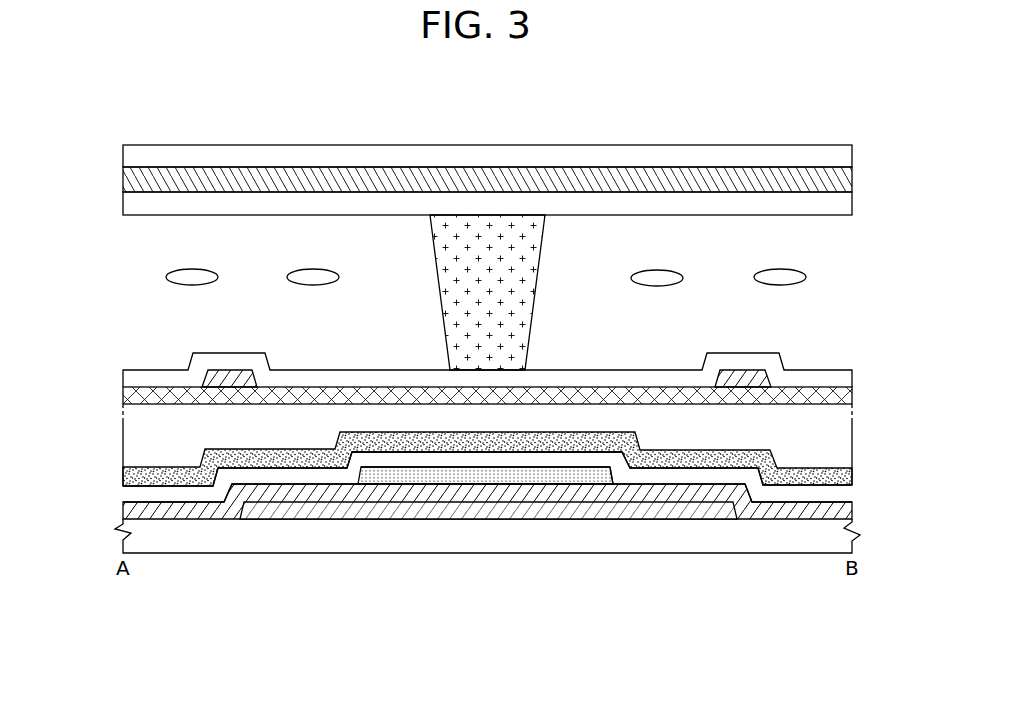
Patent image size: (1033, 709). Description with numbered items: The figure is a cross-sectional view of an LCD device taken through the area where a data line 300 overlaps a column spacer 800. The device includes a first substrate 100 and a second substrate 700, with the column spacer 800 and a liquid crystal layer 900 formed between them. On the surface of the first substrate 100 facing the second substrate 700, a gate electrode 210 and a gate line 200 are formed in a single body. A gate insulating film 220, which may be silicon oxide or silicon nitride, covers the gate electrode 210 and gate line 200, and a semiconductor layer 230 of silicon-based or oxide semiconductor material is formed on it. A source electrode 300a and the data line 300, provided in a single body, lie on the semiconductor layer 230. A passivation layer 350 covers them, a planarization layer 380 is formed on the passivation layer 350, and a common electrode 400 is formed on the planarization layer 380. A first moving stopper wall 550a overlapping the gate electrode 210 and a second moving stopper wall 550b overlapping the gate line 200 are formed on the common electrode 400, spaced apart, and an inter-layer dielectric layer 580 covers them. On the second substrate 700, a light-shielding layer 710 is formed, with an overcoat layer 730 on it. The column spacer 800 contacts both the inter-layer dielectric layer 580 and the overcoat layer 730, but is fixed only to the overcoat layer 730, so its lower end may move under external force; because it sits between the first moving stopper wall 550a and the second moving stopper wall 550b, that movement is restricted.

The first substrate 100 is at (855, 540).
The gate line 200 is at (265, 515).
The gate electrode 210 is at (418, 512).
The gate insulating film 220 is at (840, 512).
The semiconductor layer 230 is at (563, 478).
The data line 300 is at (838, 494).
The source electrode 300a is at (498, 458).
The passivation layer 350 is at (847, 473).
The planarization layer 380 is at (838, 439).
The common electrode 400 is at (840, 398).
The first moving stopper wall 550a is at (230, 376).
The second moving stopper wall 550b is at (745, 377).
The inter-layer dielectric layer 580 is at (840, 377).
The second substrate 700 is at (840, 153).
The light-shielding layer 710 is at (840, 180).
The overcoat layer 730 is at (840, 205).
The column spacer 800 is at (528, 243).
The liquid crystal layer 900 is at (790, 276).